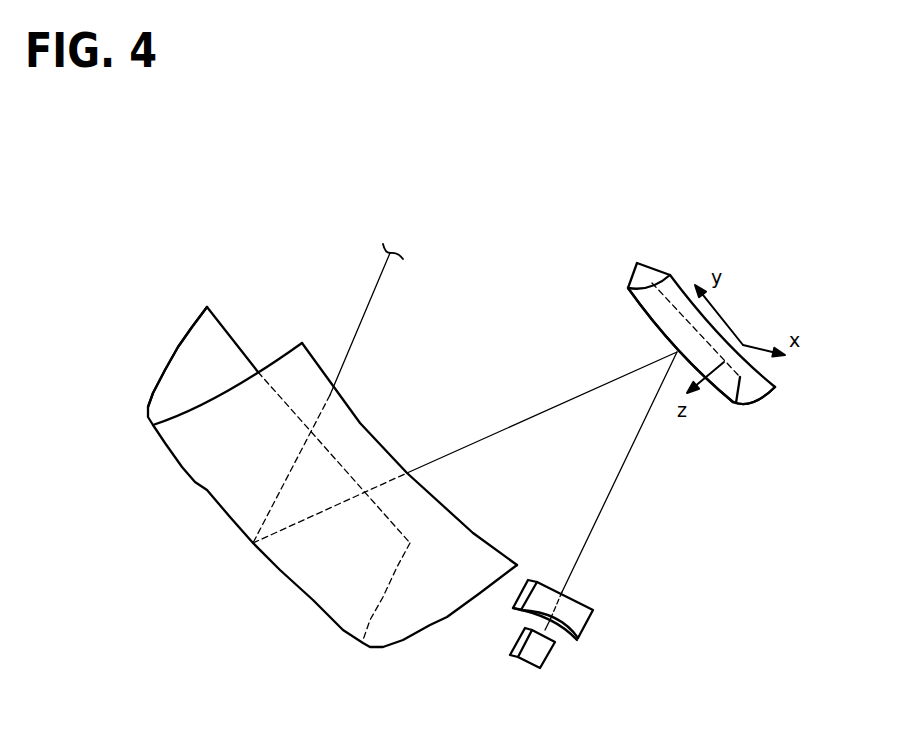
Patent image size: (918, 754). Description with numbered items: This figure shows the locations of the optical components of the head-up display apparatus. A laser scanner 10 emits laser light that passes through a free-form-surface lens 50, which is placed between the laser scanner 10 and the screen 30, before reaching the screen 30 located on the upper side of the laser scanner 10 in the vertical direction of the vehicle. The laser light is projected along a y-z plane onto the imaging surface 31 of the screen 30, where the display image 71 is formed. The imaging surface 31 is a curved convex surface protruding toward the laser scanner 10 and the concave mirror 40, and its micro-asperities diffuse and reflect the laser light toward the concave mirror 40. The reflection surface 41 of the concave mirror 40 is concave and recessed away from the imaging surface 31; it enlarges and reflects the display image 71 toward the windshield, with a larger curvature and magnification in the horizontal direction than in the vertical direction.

The laser scanner 10 is at (547, 648).
The free-form-surface lens 50 is at (588, 618).
The screen 30 is at (675, 280).
The imaging surface 31 is at (718, 391).
The display image 71 is at (740, 393).
The concave mirror 40 is at (420, 632).
The reflection surface 41 is at (195, 383).